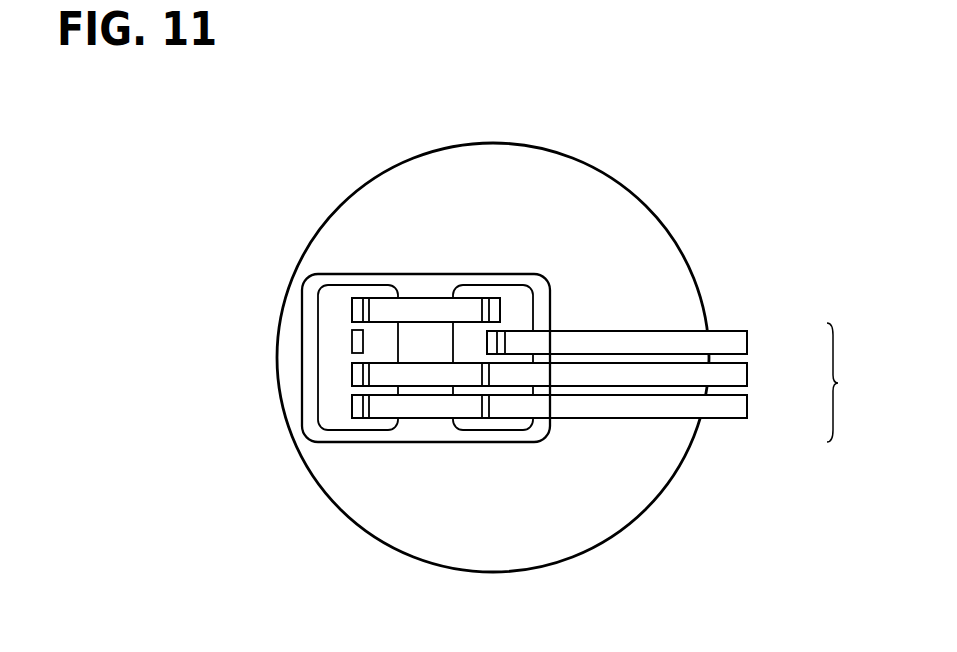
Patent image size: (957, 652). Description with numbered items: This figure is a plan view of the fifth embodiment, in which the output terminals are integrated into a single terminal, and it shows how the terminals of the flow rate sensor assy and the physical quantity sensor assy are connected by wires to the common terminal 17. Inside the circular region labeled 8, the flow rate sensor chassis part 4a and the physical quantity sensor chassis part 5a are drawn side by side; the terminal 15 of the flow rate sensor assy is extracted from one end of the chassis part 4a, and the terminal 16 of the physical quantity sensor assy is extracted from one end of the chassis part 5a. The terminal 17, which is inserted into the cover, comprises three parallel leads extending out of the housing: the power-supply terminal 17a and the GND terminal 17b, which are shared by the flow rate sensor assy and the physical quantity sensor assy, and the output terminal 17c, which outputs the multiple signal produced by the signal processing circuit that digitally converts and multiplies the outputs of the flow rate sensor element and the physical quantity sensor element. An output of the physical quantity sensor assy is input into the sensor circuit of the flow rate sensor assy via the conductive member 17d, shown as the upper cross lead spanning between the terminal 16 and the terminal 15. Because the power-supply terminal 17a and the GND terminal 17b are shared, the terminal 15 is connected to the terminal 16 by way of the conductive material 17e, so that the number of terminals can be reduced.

The circuit board cross-section region 8 is at (603, 207).
The flow rate sensor chassis part 4a is at (518, 312).
The physical quantity sensor chassis part 5a is at (332, 362).
The terminal 15 is at (495, 310).
The terminal 16 is at (357, 313).
The terminal 17 is at (848, 382).
The power-supply terminal 17a is at (733, 407).
The GND terminal 17b is at (733, 373).
The output terminal 17c is at (733, 341).
The conductive member 17d is at (430, 312).
The conductive material 17e is at (447, 373).